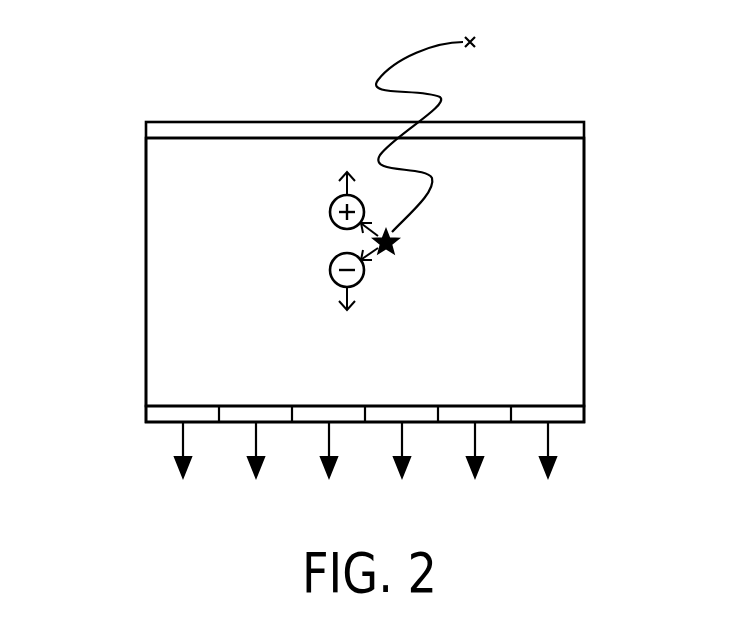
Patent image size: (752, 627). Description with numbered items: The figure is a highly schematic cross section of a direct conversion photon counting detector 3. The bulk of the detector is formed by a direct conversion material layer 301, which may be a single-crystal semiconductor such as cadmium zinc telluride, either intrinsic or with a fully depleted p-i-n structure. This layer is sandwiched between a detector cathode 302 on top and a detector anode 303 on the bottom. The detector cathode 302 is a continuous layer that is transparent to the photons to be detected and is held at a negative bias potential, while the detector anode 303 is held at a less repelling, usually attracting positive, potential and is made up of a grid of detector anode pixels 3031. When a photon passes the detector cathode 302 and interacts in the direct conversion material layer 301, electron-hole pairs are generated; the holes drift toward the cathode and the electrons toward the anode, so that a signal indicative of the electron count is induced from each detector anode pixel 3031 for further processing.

The photon counting detector 3 is at (604, 117).
The direct conversion material layer 301 is at (160, 275).
The detector cathode 302 is at (160, 130).
The detector anode 303 is at (150, 413).
The detector anode pixel 3031 is at (202, 413).